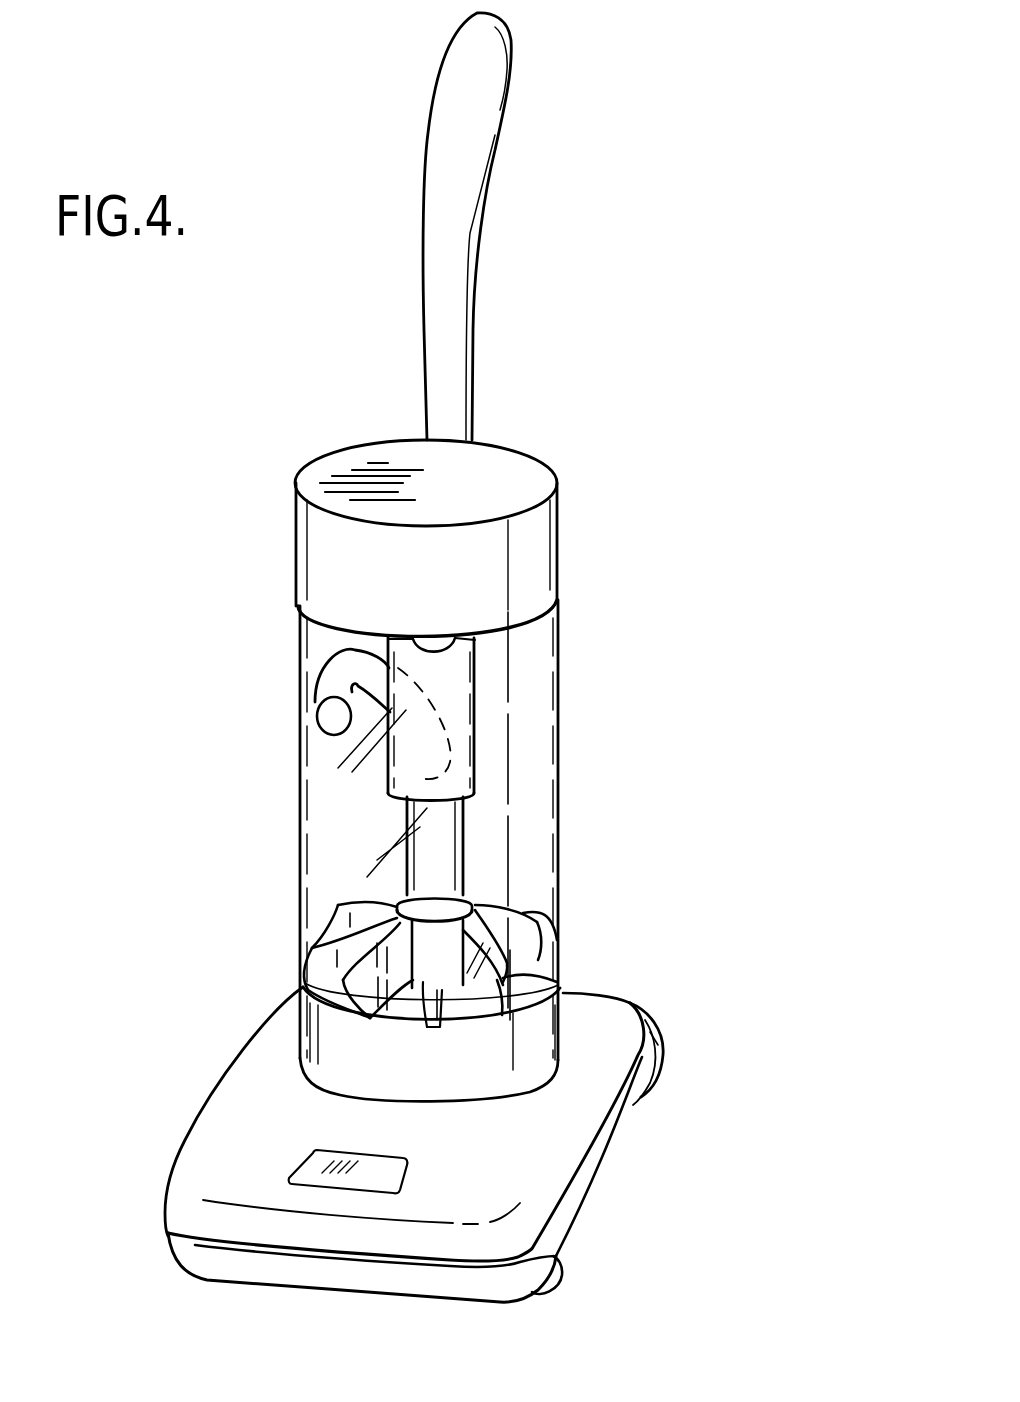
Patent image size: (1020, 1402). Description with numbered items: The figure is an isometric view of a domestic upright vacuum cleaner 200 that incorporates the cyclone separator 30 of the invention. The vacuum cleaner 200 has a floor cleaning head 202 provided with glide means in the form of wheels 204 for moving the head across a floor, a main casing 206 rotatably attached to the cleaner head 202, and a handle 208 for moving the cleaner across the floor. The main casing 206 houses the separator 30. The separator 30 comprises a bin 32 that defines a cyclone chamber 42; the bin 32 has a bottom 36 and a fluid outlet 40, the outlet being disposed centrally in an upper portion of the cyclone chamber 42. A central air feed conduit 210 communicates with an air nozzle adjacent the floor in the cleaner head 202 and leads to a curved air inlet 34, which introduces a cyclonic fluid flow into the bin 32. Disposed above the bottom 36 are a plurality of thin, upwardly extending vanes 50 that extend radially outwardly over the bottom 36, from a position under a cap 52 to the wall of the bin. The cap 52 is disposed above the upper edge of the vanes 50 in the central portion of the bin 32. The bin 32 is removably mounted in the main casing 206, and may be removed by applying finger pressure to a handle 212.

The vacuum cleaner 200 is at (730, 595).
The floor cleaning head 202 is at (540, 1157).
The wheels 204 is at (660, 1040).
The main casing 206 is at (560, 522).
The handle 208 is at (462, 227).
The central air feed conduit 210 is at (463, 820).
The handle 212 is at (475, 640).
The cyclone separator 30 is at (275, 822).
The bin 32 is at (559, 668).
The fluid inlet 34 is at (317, 712).
The bottom 36 is at (540, 987).
The fluid outlet 40 is at (476, 762).
The cyclone chamber 42 is at (537, 718).
The vanes 50 is at (559, 928).
The cap 52 is at (470, 893).